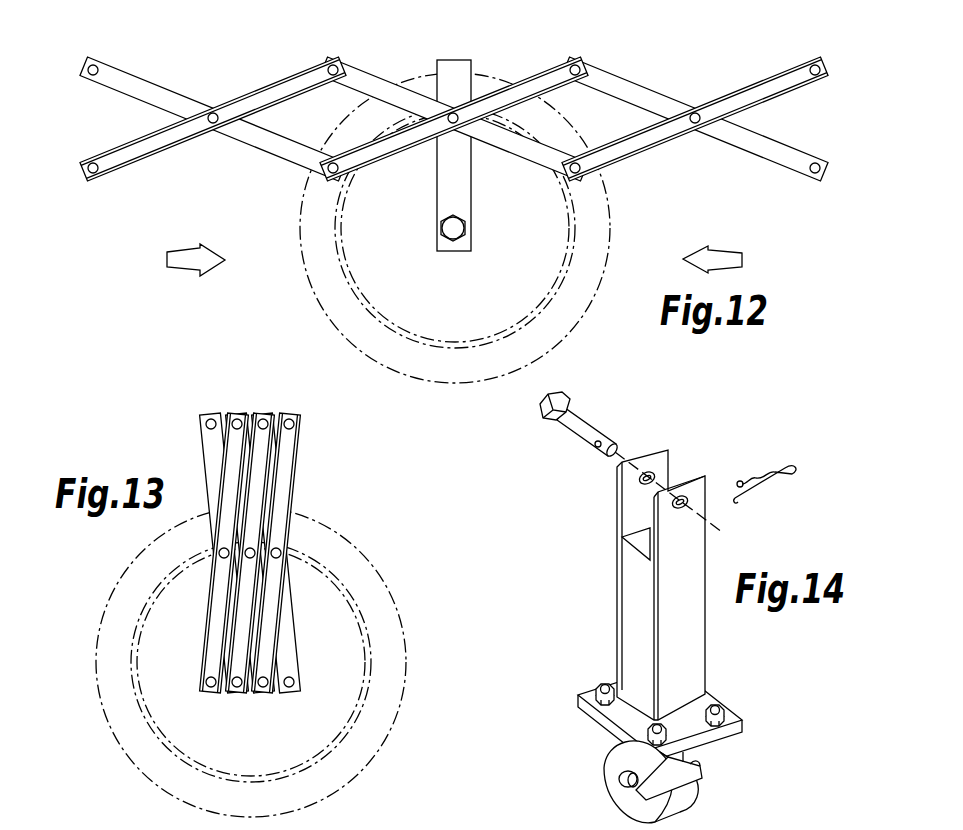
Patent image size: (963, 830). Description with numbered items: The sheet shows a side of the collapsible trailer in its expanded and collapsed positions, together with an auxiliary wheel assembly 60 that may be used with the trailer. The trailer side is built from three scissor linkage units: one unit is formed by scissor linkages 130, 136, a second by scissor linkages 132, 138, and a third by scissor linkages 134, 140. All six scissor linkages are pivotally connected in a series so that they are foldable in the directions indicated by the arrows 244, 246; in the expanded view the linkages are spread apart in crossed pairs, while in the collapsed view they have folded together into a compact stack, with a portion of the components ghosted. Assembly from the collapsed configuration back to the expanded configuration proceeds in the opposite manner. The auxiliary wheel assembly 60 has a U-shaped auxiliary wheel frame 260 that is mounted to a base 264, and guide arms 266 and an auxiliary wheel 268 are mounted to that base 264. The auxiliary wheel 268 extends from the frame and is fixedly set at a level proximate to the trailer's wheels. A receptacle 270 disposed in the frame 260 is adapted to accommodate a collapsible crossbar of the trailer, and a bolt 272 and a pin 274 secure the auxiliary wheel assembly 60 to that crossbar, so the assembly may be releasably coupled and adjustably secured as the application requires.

In FIG. 12, the scissor linkage 130 is at (150, 82).
In FIG. 13, the scissor linkage 130 is at (207, 413).
In FIG. 12, the scissor linkage 132 is at (390, 160).
In FIG. 13, the scissor linkage 132 is at (238, 693).
In FIG. 12, the scissor linkage 134 is at (627, 83).
In FIG. 13, the scissor linkage 134 is at (297, 667).
In FIG. 12, the scissor linkage 136 is at (280, 80).
In FIG. 13, the scissor linkage 136 is at (203, 667).
In FIG. 12, the scissor linkage 138 is at (520, 160).
In FIG. 13, the scissor linkage 138 is at (235, 413).
In FIG. 12, the scissor linkage 140 is at (757, 80).
In FIG. 13, the scissor linkage 140 is at (297, 460).
In FIG. 12, the arrow 244 is at (185, 251).
In FIG. 12, the arrow 246 is at (722, 249).
In FIG. 14, the auxiliary wheel assembly 60 is at (706, 447).
In FIG. 14, the U-shaped auxiliary wheel frame 260 is at (700, 650).
In FIG. 14, the base 264 is at (742, 723).
In FIG. 14, the guide arms 266 is at (700, 767).
In FIG. 14, the auxiliary wheel 268 is at (700, 790).
In FIG. 14, the receptacle 270 is at (633, 505).
In FIG. 14, the bolt 272 is at (598, 420).
In FIG. 14, the pin 274 is at (782, 462).